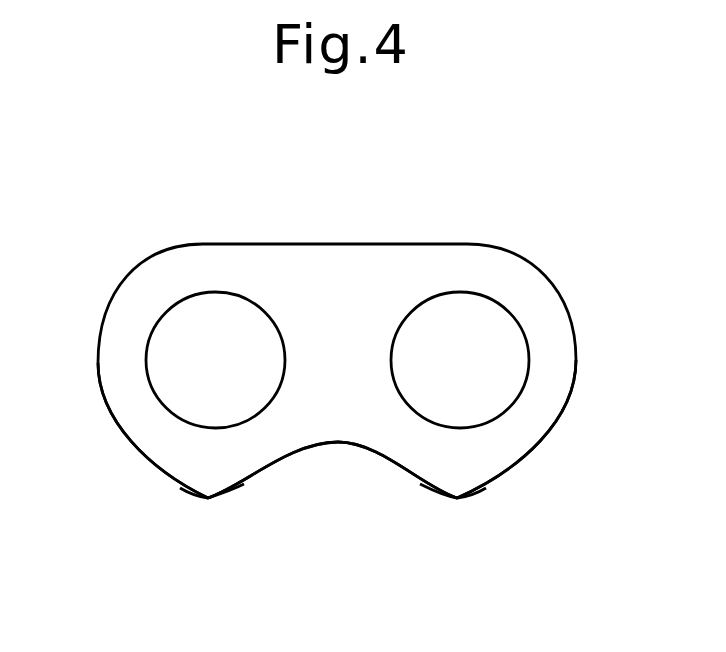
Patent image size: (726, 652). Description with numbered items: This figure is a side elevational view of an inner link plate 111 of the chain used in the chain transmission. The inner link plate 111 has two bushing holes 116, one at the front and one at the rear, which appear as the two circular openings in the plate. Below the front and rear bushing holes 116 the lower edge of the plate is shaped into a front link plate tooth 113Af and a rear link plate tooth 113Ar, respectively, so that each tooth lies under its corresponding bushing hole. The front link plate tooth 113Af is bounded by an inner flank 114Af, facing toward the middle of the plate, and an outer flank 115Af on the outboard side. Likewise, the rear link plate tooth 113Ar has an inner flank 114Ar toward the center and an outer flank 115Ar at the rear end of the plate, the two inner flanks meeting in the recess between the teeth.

The inner link plate 111 is at (352, 270).
The bushing holes 116 is at (183, 320).
The front link plate tooth 113Af is at (217, 487).
The rear link plate tooth 113Ar is at (460, 500).
The inner flank 114Af is at (252, 480).
The inner flank 114Ar is at (412, 478).
The outer flank 115Af is at (148, 463).
The outer flank 115Ar is at (522, 463).